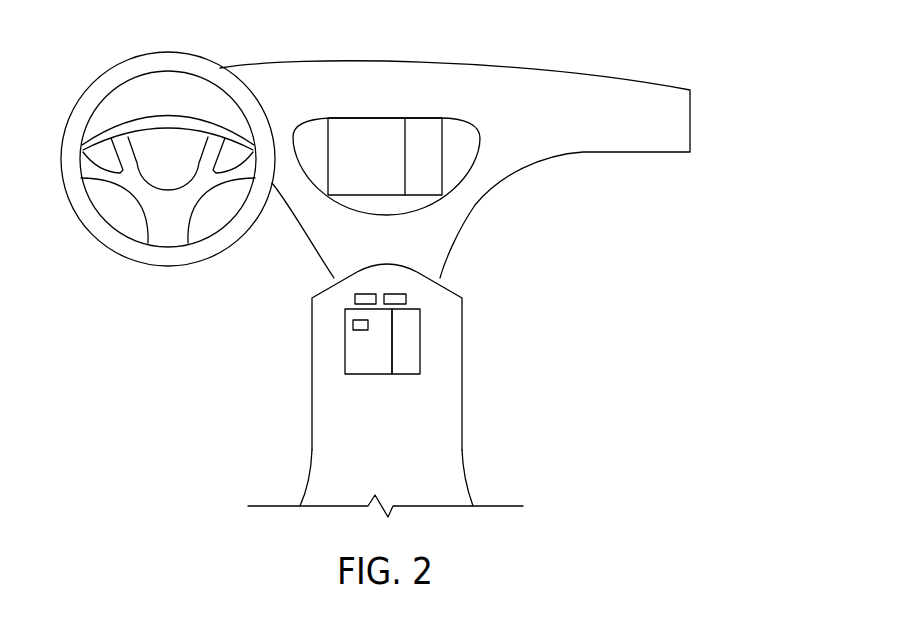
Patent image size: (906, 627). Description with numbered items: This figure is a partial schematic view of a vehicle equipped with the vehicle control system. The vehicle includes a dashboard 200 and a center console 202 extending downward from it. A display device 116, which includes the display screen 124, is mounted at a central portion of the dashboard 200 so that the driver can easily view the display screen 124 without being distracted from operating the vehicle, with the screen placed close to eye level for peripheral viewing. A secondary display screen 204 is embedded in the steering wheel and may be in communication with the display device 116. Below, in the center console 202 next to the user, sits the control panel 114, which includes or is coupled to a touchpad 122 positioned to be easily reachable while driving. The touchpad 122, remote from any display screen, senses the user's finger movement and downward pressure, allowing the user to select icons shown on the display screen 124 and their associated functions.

The dashboard 200 is at (483, 62).
The center console 202 is at (447, 312).
The secondary display screen 204 is at (166, 148).
The display device 116 is at (348, 138).
The display screen 124 is at (373, 138).
The control panel 114 is at (338, 342).
The touchpad 122 is at (407, 353).